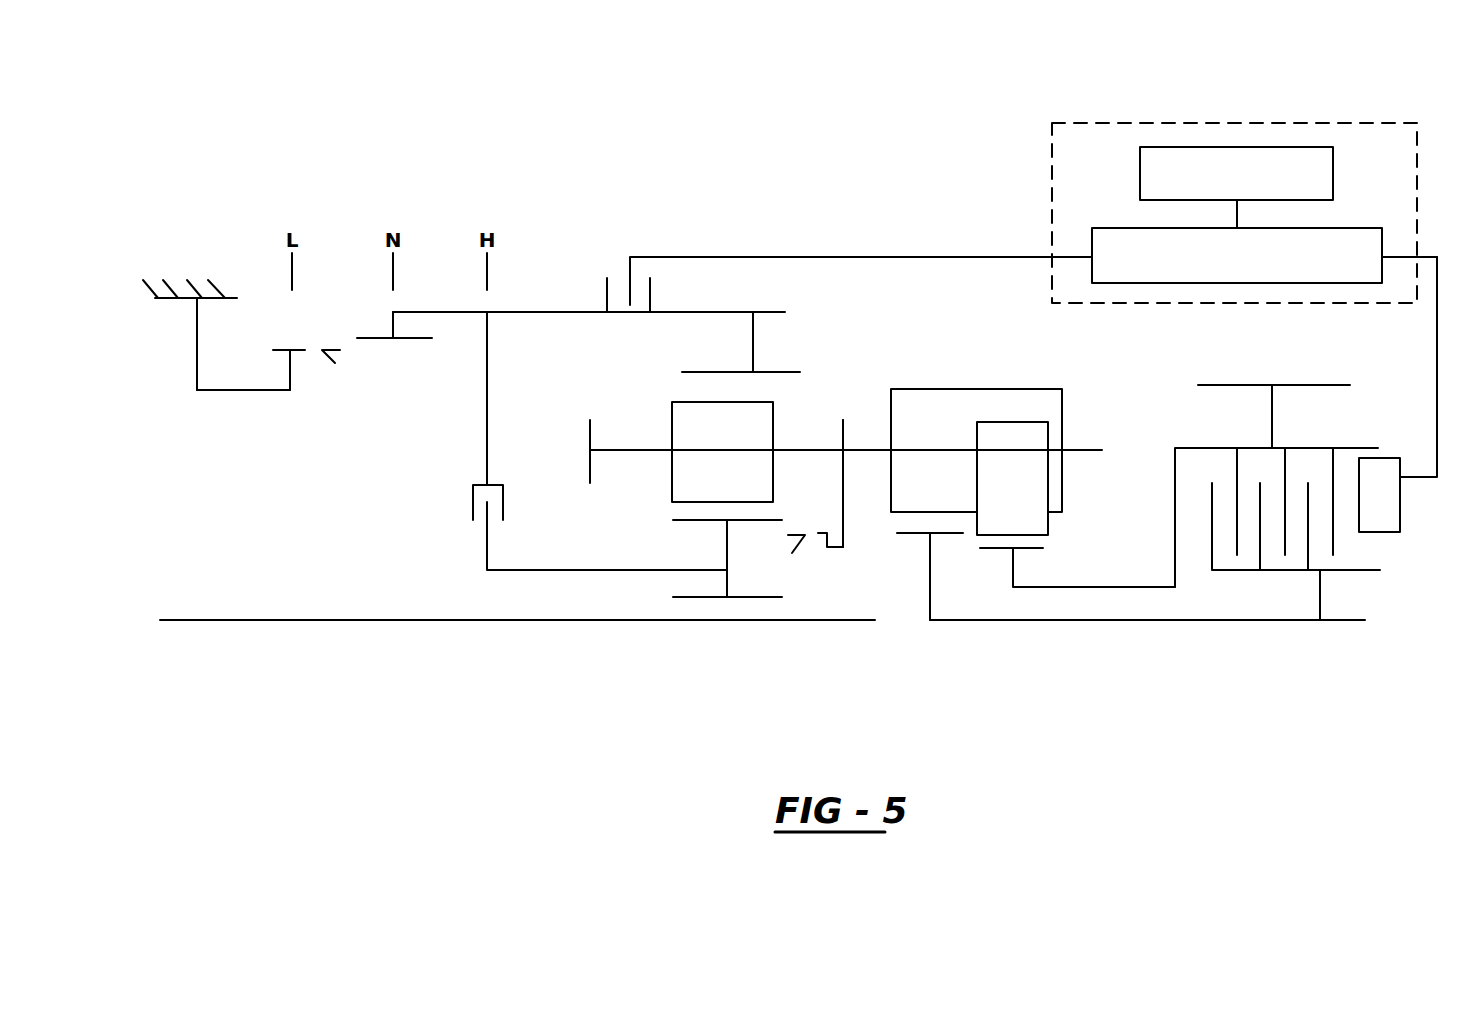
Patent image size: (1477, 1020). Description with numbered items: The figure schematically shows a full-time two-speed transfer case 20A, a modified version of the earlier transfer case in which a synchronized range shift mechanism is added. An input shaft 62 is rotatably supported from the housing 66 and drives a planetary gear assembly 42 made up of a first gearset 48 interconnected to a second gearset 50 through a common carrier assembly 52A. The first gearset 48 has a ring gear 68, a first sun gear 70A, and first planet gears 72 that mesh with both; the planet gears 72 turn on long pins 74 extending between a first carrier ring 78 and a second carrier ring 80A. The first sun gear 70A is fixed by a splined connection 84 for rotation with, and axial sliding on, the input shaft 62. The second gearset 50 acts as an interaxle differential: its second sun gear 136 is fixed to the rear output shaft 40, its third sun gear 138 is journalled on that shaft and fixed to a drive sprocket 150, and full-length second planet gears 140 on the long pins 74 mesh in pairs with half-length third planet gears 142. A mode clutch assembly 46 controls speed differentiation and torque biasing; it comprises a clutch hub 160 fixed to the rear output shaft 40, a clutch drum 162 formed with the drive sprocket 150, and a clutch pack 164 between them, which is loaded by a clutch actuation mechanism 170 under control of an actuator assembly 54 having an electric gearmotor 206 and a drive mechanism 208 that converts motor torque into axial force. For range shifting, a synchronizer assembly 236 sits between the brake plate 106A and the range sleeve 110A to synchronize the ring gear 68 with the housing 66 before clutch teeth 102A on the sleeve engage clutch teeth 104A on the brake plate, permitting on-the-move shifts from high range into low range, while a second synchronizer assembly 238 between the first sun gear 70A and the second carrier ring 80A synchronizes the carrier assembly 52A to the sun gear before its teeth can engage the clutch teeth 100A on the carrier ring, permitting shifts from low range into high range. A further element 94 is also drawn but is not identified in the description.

The transfer case 20A is at (921, 131).
The rear output shaft 40 is at (1103, 620).
The planetary gear assembly 42 is at (906, 340).
The mode clutch assembly 46 is at (1365, 372).
The first gearset 48 is at (812, 376).
The second gearset 50 is at (1053, 370).
The carrier assembly 52A is at (849, 398).
The actuator assembly 54 is at (1398, 165).
The input shaft 62 is at (425, 622).
The housing 66 is at (197, 360).
The ring gear 68 is at (775, 372).
The first sun gear 70A is at (727, 540).
The first planet gears 72 is at (692, 422).
The long pins 74 is at (913, 450).
The first carrier ring 78 is at (588, 436).
The second carrier ring 80A is at (845, 500).
The splined connection 84 is at (730, 605).
The shift fork 94 is at (487, 400).
The clutch teeth 100A is at (822, 532).
The clutch teeth 102A is at (415, 339).
The clutch teeth 104A is at (283, 347).
The brake plate 106A is at (240, 390).
The range sleeve 110A is at (527, 312).
The second sun gear 136 is at (928, 560).
The third sun gear 138 is at (1013, 568).
The second planet gears 140 is at (930, 398).
The third planet gears 142 is at (1002, 438).
The drive sprocket 150 is at (1200, 383).
The clutch hub 160 is at (1320, 590).
The clutch drum 162 is at (1198, 447).
The clutch pack 164 is at (1198, 513).
The clutch actuation mechanism 170 is at (1393, 512).
The electric gearmotor 206 is at (1148, 170).
The drive mechanism 208 is at (1337, 228).
The synchronizer assembly 236 is at (341, 380).
The second synchronizer assembly 238 is at (804, 559).